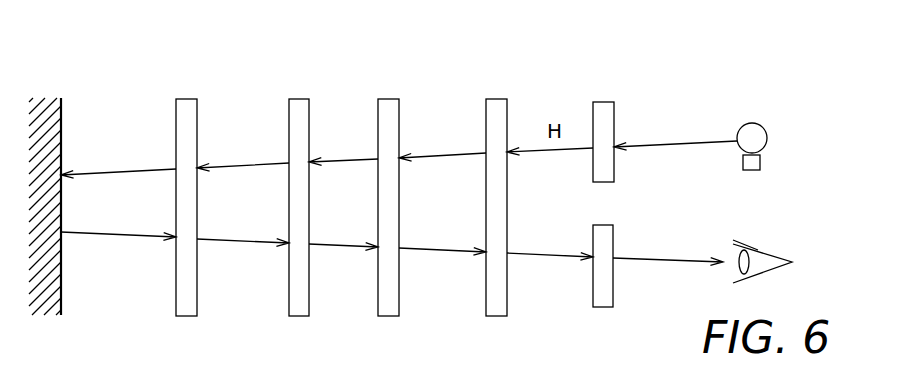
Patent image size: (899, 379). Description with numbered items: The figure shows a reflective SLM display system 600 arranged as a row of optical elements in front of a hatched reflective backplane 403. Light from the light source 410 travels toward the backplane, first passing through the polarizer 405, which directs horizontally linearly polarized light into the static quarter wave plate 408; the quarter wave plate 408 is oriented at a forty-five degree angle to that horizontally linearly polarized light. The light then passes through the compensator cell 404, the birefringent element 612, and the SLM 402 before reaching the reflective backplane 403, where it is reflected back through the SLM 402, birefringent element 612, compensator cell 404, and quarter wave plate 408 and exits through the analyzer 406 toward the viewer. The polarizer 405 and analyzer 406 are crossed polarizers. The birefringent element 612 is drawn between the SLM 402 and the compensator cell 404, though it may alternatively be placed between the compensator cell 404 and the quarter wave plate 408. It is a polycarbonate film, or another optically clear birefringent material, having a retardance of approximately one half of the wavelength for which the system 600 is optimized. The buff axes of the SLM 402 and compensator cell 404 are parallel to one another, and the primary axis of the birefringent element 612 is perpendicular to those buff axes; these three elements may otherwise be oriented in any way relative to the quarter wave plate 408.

The system 600 is at (312, 60).
The reflective backplane 403 is at (62, 275).
The SLM 402 is at (184, 316).
The birefringent element 612 is at (297, 316).
The compensator cell 404 is at (390, 316).
The static quarter wave plate 408 is at (502, 316).
The polarizer 405 is at (603, 102).
The analyzer 406 is at (598, 307).
The light source 410 is at (767, 137).